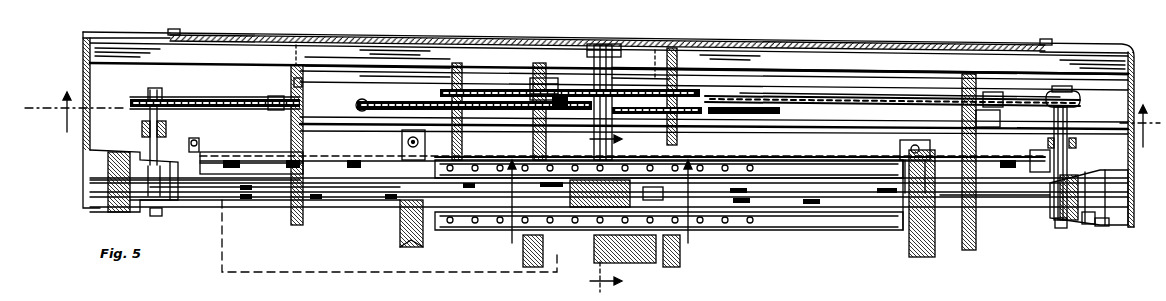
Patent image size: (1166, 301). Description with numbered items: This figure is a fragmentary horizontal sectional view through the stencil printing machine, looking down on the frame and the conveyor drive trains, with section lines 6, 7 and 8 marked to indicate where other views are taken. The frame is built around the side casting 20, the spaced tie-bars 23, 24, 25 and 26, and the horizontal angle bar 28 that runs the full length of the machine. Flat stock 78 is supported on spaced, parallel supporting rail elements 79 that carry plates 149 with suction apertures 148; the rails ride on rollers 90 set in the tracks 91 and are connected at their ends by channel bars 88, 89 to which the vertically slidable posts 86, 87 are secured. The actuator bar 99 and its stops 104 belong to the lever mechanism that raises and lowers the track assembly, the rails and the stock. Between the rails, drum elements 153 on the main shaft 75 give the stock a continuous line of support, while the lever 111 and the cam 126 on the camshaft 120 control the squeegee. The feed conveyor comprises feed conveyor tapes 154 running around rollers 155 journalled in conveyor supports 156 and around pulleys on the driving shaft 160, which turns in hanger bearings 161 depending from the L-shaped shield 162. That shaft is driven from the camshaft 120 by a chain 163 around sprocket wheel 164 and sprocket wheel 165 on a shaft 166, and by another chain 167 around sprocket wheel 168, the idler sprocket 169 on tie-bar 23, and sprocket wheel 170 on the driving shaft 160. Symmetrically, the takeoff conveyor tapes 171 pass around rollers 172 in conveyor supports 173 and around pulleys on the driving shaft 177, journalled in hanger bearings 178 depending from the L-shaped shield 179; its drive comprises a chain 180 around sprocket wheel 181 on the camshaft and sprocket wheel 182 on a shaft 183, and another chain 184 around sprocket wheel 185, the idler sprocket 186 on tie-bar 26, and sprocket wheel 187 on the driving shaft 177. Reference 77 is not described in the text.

The section line 6- 6 is at (592, 127).
The section line 7- 7 is at (598, 210).
The section line 8- 8 is at (596, 212).
The side casting 20 is at (708, 46).
The tie-bar 23 is at (291, 76).
The tie-bar 24 is at (460, 63).
The tie-bar 25 is at (658, 75).
The tie-bar 26 is at (976, 244).
The angle bar 28 is at (184, 97).
The main shaft 75 is at (620, 263).
The bracket 77 is at (637, 79).
The flat stock 78 is at (356, 272).
The supporting rail elements 79 is at (835, 178).
The post 86 is at (402, 141).
The post 87 is at (900, 144).
The channel bar 88 is at (400, 228).
The channel bar 89 is at (923, 257).
The rollers 90 is at (290, 160).
The tracks 91 is at (222, 160).
The actuator bar 99 is at (340, 160).
The stops 104 is at (185, 142).
The lever 111 is at (596, 45).
The camshaft 120 is at (528, 267).
The cam 126 is at (538, 63).
The apertures 148 is at (748, 166).
The plates 149 is at (669, 221).
The drum elements 153 is at (570, 262).
The feed conveyor tapes 154 is at (192, 190).
The rollers 155 is at (246, 200).
The conveyor supports 156 is at (274, 202).
The driving shaft 160 is at (150, 143).
The hanger bearings 161 is at (142, 127).
The L-shaped shield 162 is at (99, 212).
The chain 163 is at (504, 102).
The sprocket wheel 164 is at (530, 86).
The sprocket wheel 165 is at (400, 76).
The shaft 166 is at (375, 66).
The chain 167 is at (216, 99).
The sprocket wheel 168 is at (343, 57).
The idler sprocket 169 is at (268, 98).
The sprocket wheel 170 is at (148, 90).
The takeoff conveyor tapes 171 is at (1071, 228).
The rollers 172 is at (800, 203).
The conveyor supports 173 is at (989, 203).
The driving shaft 177 is at (1072, 166).
The hanger bearings 178 is at (1078, 143).
The L-shaped shield 179 is at (1082, 224).
The chain 180 is at (622, 107).
The sprocket wheel 181 is at (566, 97).
The sprocket wheel 182 is at (780, 111).
The shaft 183 is at (765, 90).
The chain 184 is at (886, 97).
The sprocket wheel 185 is at (742, 96).
The idler sprocket 186 is at (998, 92).
The sprocket wheel 187 is at (1076, 93).